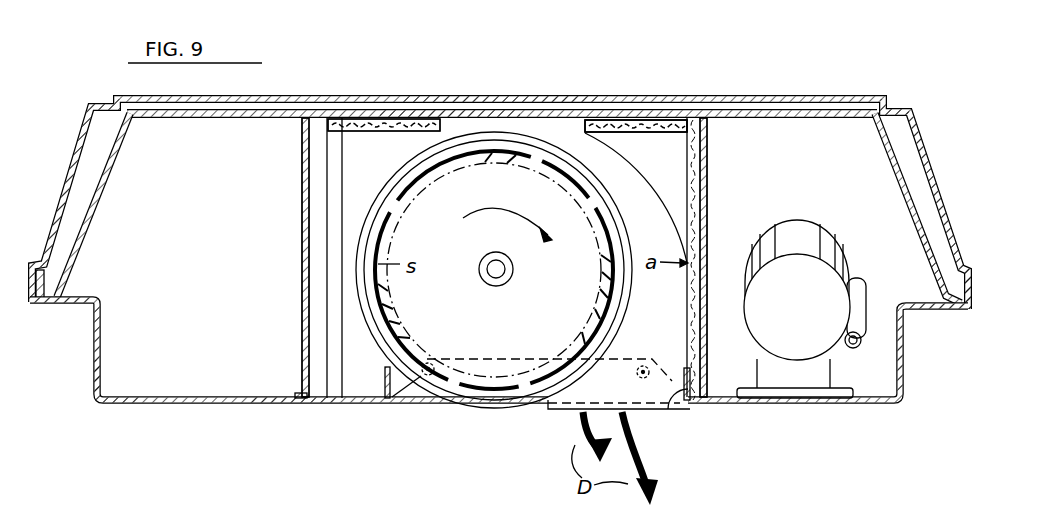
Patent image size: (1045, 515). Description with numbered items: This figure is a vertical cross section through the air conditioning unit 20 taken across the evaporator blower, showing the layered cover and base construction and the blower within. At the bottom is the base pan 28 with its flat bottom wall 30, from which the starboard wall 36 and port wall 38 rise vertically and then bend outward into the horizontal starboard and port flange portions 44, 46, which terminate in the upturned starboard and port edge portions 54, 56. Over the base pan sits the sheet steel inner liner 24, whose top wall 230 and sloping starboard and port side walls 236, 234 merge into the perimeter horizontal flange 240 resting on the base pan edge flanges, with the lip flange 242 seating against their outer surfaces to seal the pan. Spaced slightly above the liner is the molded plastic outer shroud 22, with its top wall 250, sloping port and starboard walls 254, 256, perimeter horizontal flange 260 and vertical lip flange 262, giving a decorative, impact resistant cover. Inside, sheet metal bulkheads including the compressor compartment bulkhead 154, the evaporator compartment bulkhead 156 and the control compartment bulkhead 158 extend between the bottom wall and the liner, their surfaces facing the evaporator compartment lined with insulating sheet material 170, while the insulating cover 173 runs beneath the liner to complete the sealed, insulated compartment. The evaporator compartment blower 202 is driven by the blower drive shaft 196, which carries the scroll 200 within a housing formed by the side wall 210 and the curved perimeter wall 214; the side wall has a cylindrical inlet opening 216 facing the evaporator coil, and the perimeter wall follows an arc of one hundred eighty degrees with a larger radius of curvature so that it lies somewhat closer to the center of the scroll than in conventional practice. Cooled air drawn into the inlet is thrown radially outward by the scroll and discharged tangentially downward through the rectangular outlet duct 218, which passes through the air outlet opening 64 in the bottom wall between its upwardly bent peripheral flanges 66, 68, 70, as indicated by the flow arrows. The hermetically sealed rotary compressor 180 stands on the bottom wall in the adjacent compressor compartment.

The air conditioning unit 20 is at (320, 88).
The outer shroud 22 is at (438, 100).
The inner liner 24 is at (210, 126).
The base pan 28 is at (178, 406).
The bottom wall 30 is at (304, 405).
The starboard wall 36 is at (92, 372).
The port wall 38 is at (903, 366).
The starboard flange portion 44 is at (67, 306).
The port flange portion 46 is at (934, 311).
The starboard edge portion 54 is at (47, 293).
The port edge portion 56 is at (950, 298).
The air outlet opening 64 is at (417, 397).
The peripheral flange 66 is at (384, 383).
The peripheral flange 68 is at (636, 357).
The peripheral flange 70 is at (676, 410).
The compressor compartment bulkhead 154 is at (707, 175).
The evaporator compartment bulkhead 156 is at (130, 388).
The control compartment bulkhead 158 is at (302, 248).
The insulating sheet material 170 is at (302, 178).
The cover 173 is at (375, 137).
The rotary compressor 180 is at (820, 225).
The blower drive shaft 196 is at (505, 269).
The scroll 200 is at (508, 162).
The evaporator compartment blower 202 is at (469, 414).
The side wall 210 is at (652, 184).
The curved perimeter wall 214 is at (590, 130).
The inlet opening 216 is at (580, 356).
The outlet duct 218 is at (558, 411).
The top wall 230 is at (375, 118).
The port side wall 234 is at (873, 129).
The starboard side wall 236 is at (93, 210).
The perimeter horizontal flange 240 is at (928, 262).
The lip flange 242 is at (29, 305).
The top wall 250 is at (490, 100).
The port wall 254 is at (916, 118).
The starboard wall 256 is at (80, 128).
The perimeter horizontal flange 260 is at (953, 256).
The vertical lip flange 262 is at (966, 322).